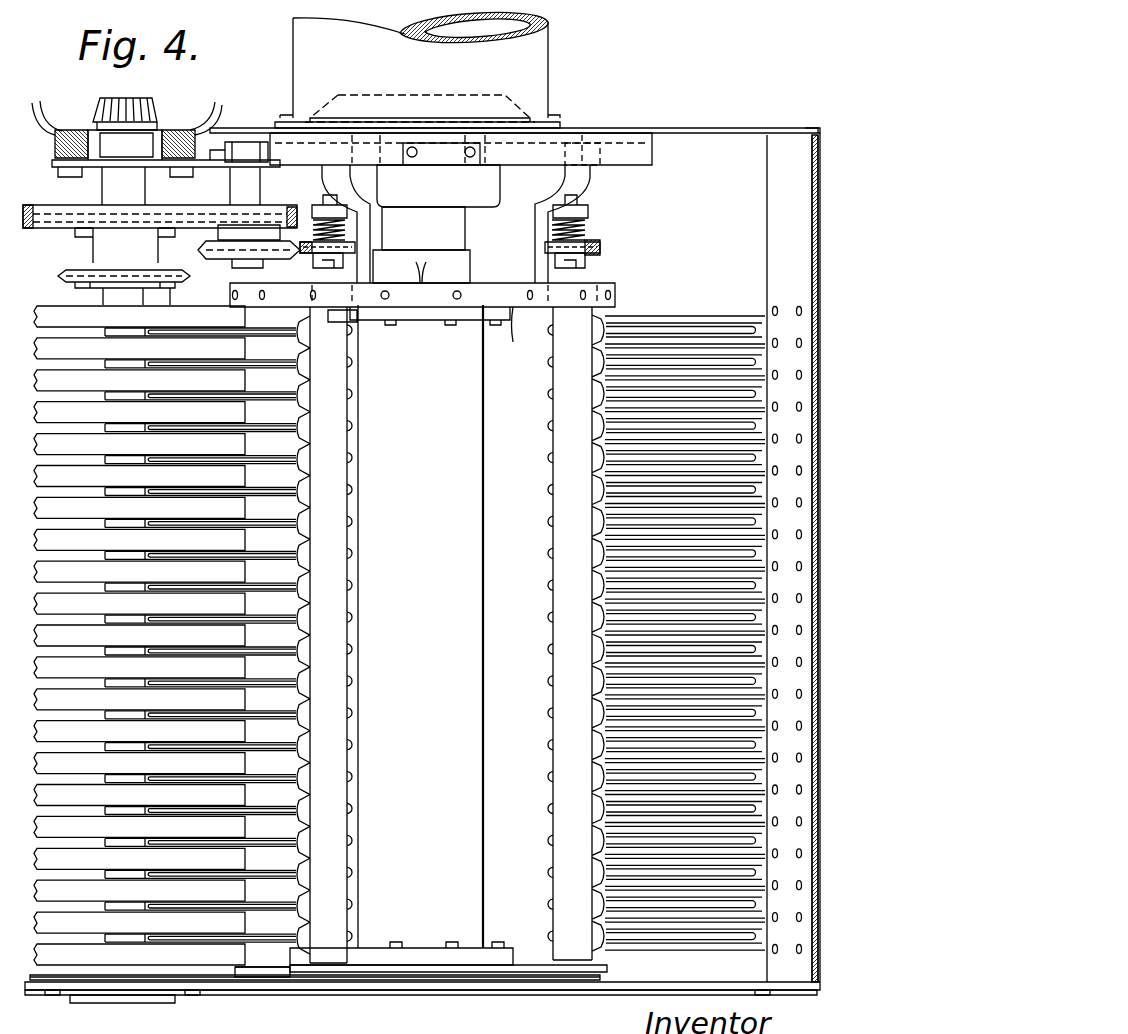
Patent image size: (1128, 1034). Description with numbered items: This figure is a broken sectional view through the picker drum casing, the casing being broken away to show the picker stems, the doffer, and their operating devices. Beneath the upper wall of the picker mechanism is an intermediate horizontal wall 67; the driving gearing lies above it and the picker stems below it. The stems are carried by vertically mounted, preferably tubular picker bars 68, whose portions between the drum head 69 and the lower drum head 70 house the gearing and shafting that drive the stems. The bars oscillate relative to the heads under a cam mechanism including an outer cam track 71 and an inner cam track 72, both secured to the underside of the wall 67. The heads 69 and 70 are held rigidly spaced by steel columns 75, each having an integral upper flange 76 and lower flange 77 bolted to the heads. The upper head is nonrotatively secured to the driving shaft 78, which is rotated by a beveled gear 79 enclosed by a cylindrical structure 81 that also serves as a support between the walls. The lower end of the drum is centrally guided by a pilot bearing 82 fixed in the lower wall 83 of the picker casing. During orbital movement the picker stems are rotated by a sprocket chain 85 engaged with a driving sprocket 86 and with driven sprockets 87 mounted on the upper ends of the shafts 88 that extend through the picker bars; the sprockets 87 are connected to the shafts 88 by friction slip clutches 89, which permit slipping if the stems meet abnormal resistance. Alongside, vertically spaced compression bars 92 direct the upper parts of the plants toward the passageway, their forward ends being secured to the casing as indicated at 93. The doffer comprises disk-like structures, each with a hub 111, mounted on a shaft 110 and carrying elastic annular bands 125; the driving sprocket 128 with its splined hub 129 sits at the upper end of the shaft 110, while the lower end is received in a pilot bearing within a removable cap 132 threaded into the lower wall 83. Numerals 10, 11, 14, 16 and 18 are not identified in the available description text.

The machine 10 is at (585, 128).
The casing frame 11 is at (776, 935).
The tubes 14 is at (617, 745).
The base plate 16 is at (250, 953).
The base plate 18 is at (308, 980).
The intermediate horizontal wall 67 is at (710, 128).
The picker bars 68 is at (560, 599).
The drum head 69 is at (462, 258).
The lower drum head 70 is at (526, 965).
The outer cam track 71 is at (655, 150).
The inner cam track 72 is at (618, 170).
The steel columns 75 is at (466, 210).
The upper flange 76 is at (514, 325).
The lower flange 77 is at (470, 953).
The driving shaft 78 is at (445, 231).
The beveled gear 79 is at (545, 92).
The cylindrical structure 81 is at (300, 45).
The pilot bearing 82 is at (438, 990).
The lower wall 83 is at (580, 990).
The sprocket chain 85 is at (300, 235).
The driving sprocket 86 is at (236, 247).
The driven sprockets 87 is at (314, 256).
The shafts 88 is at (340, 185).
The friction slip clutches 89 is at (585, 226).
The compression bars 92 is at (682, 378).
The casing attachment 93 is at (799, 344).
The shaft 110 is at (133, 98).
The hub 111 is at (133, 590).
The annular bands 125 is at (238, 415).
The driving sprocket 128 is at (72, 272).
The splined hub 129 is at (115, 292).
The removable cap 132 is at (100, 998).